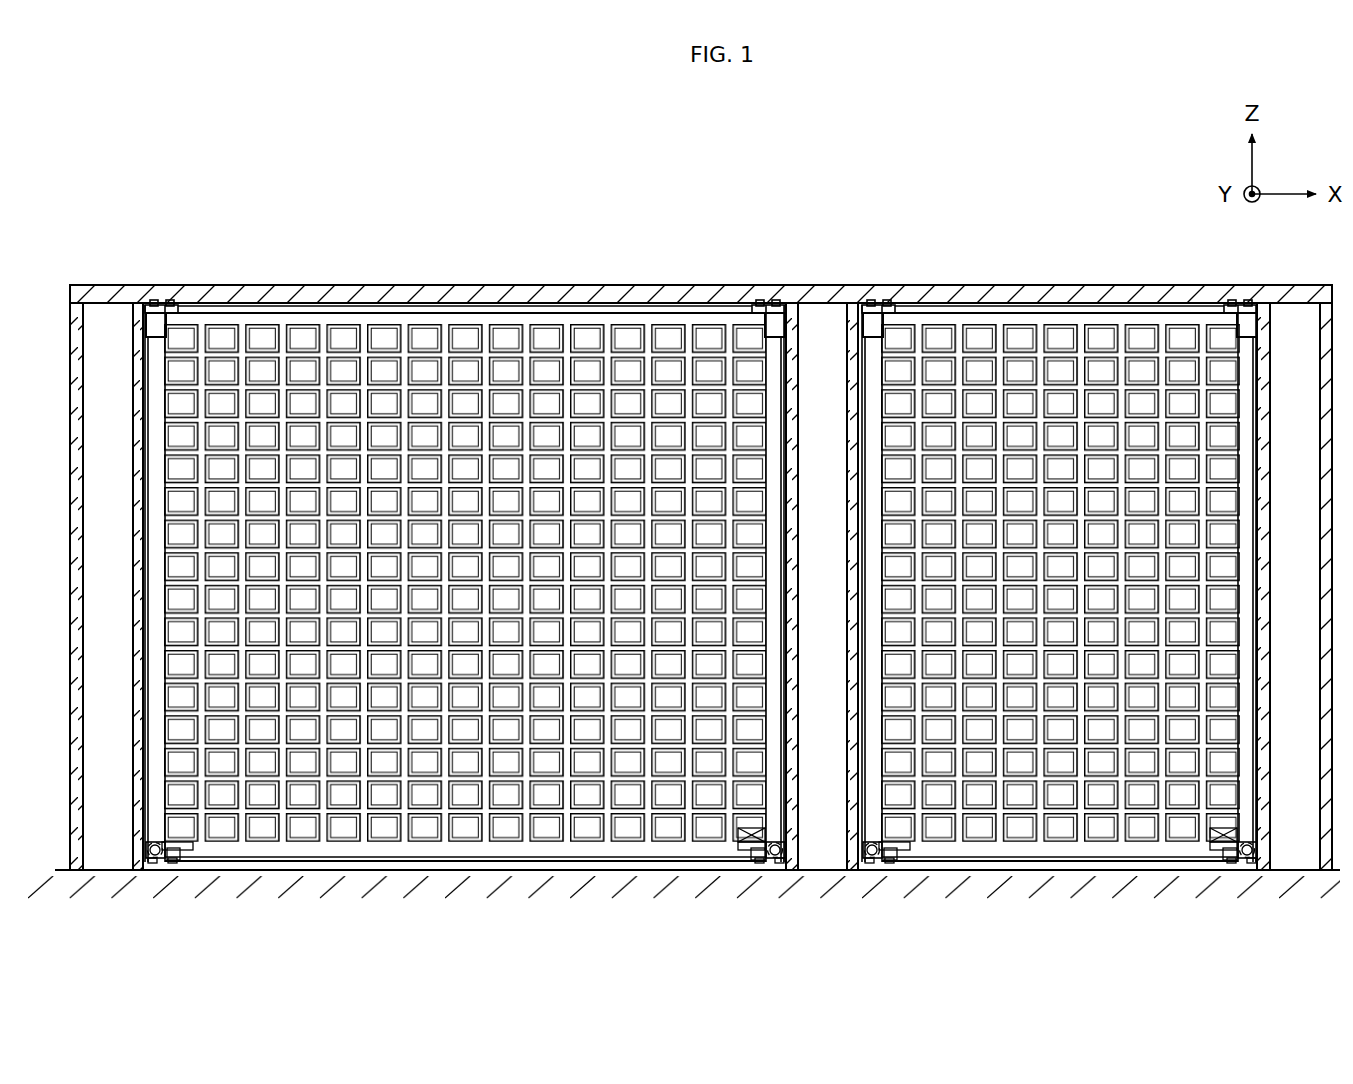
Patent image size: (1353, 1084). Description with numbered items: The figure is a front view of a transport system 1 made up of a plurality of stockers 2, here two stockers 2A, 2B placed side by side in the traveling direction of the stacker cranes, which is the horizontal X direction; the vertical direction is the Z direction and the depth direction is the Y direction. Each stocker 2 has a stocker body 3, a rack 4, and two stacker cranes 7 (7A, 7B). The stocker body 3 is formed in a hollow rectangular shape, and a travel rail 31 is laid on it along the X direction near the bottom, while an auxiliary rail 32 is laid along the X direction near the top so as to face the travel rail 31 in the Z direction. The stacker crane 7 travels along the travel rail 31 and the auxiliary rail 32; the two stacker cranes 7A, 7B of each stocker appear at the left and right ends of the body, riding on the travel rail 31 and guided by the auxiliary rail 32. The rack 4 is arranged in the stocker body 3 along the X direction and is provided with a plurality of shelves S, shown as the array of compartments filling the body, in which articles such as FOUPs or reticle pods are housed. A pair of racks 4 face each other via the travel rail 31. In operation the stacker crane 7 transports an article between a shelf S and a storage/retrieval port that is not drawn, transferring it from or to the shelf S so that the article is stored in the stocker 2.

The transport system 1 is at (748, 233).
The stocker 2 is at (701, 580).
The stocker 2A is at (534, 282).
The stocker 2B is at (1041, 282).
The stocker body 3 is at (287, 292).
The travel rail 31 is at (355, 862).
The auxiliary rail 32 is at (367, 303).
The rack 4 is at (633, 328).
The shelf S is at (470, 387).
The stacker crane 7 is at (469, 894).
The stacker crane 7A is at (164, 879).
The stacker crane 7B is at (769, 879).